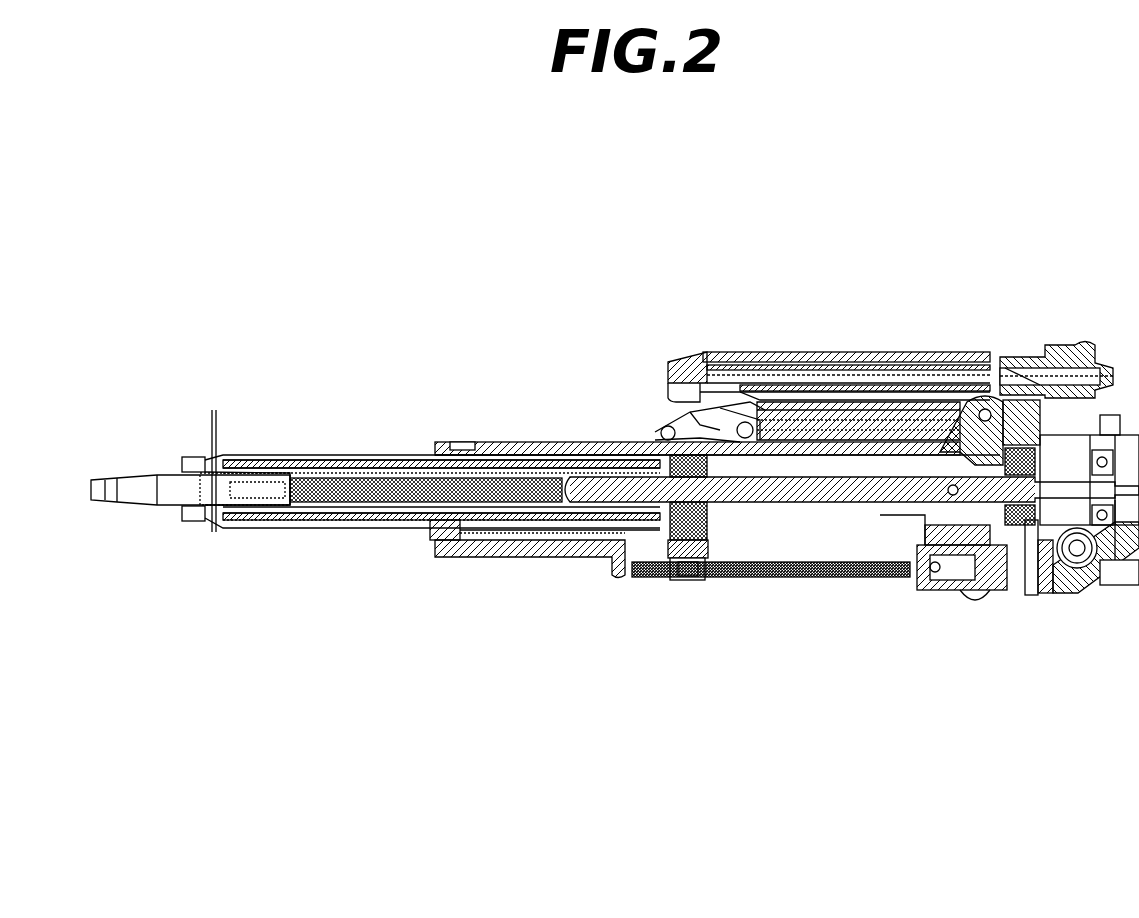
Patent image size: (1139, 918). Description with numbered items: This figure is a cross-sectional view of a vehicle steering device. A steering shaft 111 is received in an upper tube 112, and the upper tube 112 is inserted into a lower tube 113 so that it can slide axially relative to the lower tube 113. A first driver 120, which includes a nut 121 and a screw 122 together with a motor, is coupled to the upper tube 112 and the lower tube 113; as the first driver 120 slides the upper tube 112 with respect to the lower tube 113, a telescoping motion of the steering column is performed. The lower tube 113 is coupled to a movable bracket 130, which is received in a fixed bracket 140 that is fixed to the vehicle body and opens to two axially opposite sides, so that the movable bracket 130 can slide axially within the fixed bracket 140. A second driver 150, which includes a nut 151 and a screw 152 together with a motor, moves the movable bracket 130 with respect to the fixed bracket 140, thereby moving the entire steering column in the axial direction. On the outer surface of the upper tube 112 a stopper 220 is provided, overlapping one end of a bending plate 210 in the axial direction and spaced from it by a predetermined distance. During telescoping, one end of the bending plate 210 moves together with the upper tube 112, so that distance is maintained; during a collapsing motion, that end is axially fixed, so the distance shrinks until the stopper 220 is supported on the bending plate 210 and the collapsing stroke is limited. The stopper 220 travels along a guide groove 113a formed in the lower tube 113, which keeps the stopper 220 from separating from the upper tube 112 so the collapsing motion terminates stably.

The steering shaft 111 is at (247, 487).
The upper tube 112 is at (336, 513).
The lower tube 113 is at (508, 442).
The guide groove 113a is at (525, 540).
The first driver 120 is at (959, 605).
The nut 121 is at (675, 578).
The screw 122 is at (805, 577).
The movable bracket 130 is at (860, 408).
The fixed bracket 140 is at (750, 352).
The second driver 150 is at (1018, 357).
The nut 151 is at (978, 362).
The screw 152 is at (915, 362).
The bending plate 210 is at (728, 540).
The stopper 220 is at (443, 543).